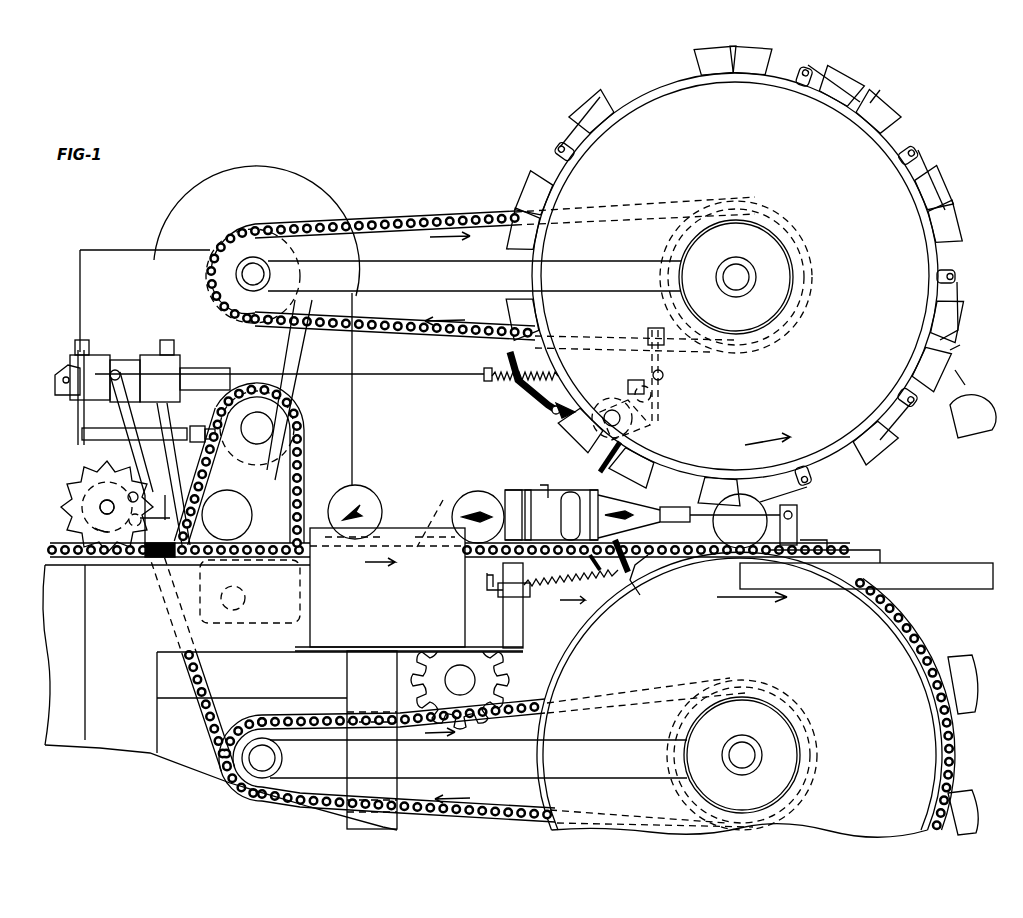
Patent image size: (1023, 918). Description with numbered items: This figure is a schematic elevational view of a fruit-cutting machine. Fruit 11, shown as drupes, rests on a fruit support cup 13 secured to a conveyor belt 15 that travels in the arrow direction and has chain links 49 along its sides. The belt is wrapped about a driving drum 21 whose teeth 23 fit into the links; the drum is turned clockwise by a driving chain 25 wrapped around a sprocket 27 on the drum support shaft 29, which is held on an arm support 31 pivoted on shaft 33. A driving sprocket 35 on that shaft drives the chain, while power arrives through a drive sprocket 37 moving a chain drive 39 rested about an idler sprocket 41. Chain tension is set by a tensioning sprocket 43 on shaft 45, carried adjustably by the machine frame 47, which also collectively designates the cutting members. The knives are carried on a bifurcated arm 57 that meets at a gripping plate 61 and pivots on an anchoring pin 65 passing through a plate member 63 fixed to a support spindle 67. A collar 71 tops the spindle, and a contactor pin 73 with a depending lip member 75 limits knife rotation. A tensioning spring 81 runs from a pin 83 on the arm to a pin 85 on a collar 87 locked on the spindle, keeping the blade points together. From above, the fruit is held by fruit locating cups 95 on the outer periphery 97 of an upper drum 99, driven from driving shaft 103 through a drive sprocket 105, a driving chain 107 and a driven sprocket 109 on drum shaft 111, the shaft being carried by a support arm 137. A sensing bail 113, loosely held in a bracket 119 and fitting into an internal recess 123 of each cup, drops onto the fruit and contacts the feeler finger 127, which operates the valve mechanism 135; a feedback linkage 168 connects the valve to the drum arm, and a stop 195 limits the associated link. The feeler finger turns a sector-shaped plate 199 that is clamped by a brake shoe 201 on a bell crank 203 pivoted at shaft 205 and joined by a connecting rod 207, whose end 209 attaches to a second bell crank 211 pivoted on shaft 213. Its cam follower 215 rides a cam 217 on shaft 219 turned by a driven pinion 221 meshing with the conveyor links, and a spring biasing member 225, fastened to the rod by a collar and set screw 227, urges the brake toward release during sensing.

The fruit 11 is at (362, 510).
The fruit support cup 13 is at (385, 540).
The conveyor belt 15 is at (448, 508).
The driving drum 21 is at (912, 662).
The teeth 23 is at (553, 668).
The driving chain 25 is at (515, 720).
The sprocket 27 is at (742, 688).
The drum support shaft 29 is at (760, 752).
The arm support 31 is at (486, 770).
The shaft 33 is at (248, 770).
The driving sprocket 35 is at (233, 755).
The drive sprocket 37 is at (270, 404).
The chain drive 39 is at (305, 448).
The idler sprocket 41 is at (165, 598).
The tensioning sprocket 43 is at (500, 675).
The shaft 45 is at (470, 683).
The machine frame 47 is at (675, 515).
The chain links 49 is at (50, 553).
The bifurcated arm 57 is at (594, 490).
The gripping plate 61 is at (672, 506).
The plate member 63 is at (549, 480).
The anchoring pin 65 is at (571, 490).
The support spindle 67 is at (502, 567).
The collar 71 is at (508, 488).
The contactor pin 73 is at (528, 488).
The lip member 75 is at (505, 492).
The tensioning spring 81 is at (555, 590).
The pin 83 is at (620, 568).
The pin 85 is at (488, 583).
The collar 87 is at (500, 597).
The fruit locating cup 95 is at (765, 62).
The outer periphery 97 is at (950, 262).
The upper drum 99 is at (880, 150).
The driving shaft 103 is at (245, 280).
The drive sprocket 105 is at (285, 232).
The driving chain 107 is at (420, 222).
The driven sprocket 109 is at (780, 318).
The drum shaft 111 is at (742, 262).
The bail 113 is at (570, 113).
The bracket 119 is at (668, 72).
The internal recess 123 is at (977, 363).
The feeler finger 127 is at (650, 445).
The valve mechanism 135 is at (575, 418).
The support arm 137 is at (466, 263).
The feedback linkage 168 is at (648, 330).
The stop 195 is at (212, 420).
The sector-shaped plate 199 is at (608, 405).
The brake shoe 201 is at (633, 378).
The bell crank 203 is at (662, 374).
The shaft 205 is at (660, 392).
The connecting rod 207 is at (398, 360).
The end 209 is at (118, 372).
The second bell crank 211 is at (118, 410).
The shaft 213 is at (118, 465).
The cam follower 215 is at (122, 563).
The cam 217 is at (85, 522).
The shaft 219 is at (100, 506).
The driven pinion 221 is at (70, 530).
The spring biasing member 225 is at (522, 385).
The collar and set screw 227 is at (482, 380).